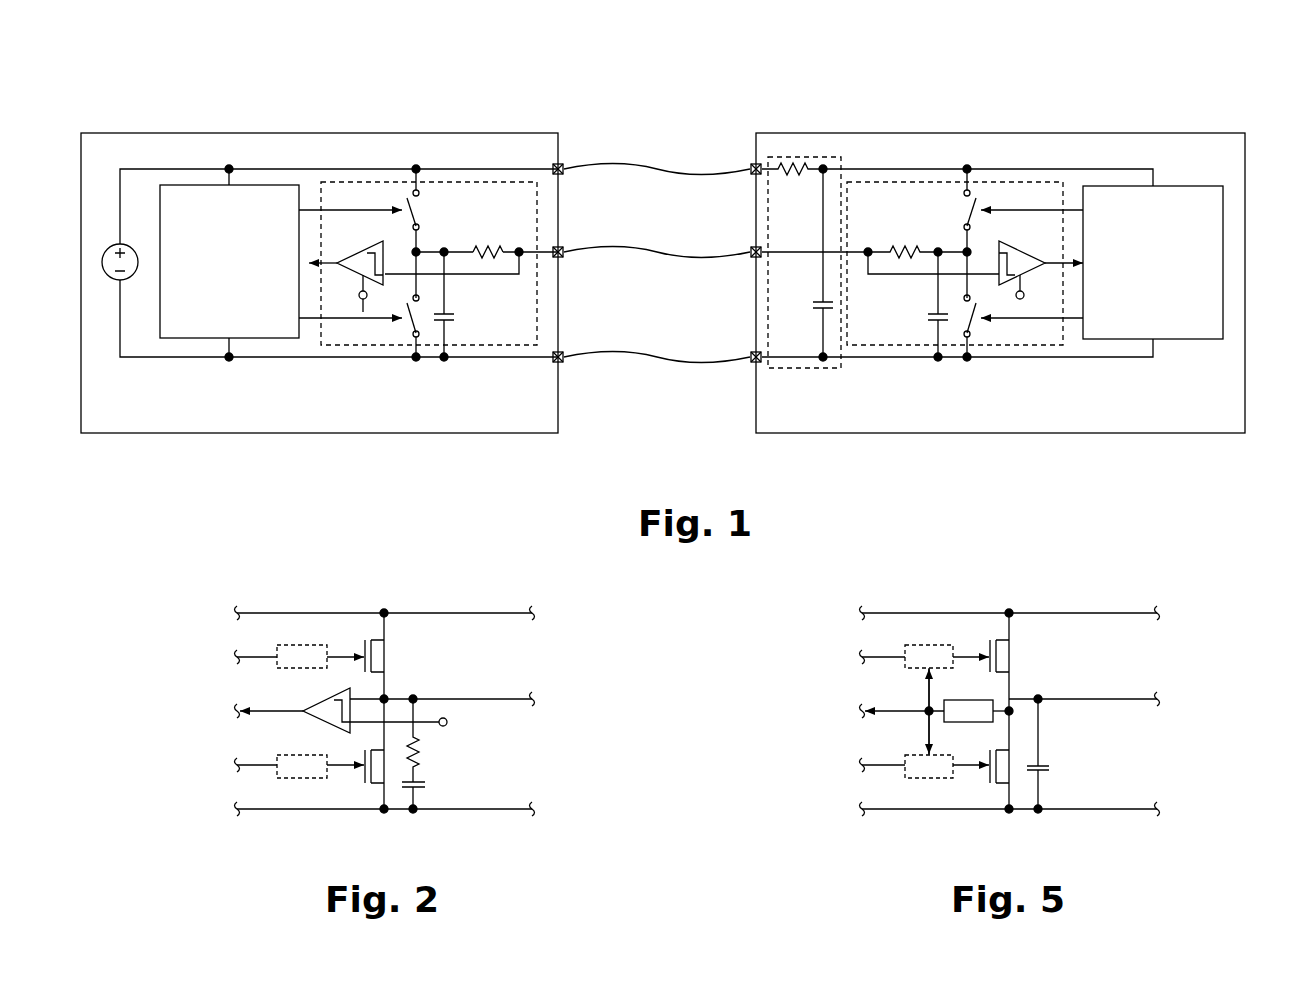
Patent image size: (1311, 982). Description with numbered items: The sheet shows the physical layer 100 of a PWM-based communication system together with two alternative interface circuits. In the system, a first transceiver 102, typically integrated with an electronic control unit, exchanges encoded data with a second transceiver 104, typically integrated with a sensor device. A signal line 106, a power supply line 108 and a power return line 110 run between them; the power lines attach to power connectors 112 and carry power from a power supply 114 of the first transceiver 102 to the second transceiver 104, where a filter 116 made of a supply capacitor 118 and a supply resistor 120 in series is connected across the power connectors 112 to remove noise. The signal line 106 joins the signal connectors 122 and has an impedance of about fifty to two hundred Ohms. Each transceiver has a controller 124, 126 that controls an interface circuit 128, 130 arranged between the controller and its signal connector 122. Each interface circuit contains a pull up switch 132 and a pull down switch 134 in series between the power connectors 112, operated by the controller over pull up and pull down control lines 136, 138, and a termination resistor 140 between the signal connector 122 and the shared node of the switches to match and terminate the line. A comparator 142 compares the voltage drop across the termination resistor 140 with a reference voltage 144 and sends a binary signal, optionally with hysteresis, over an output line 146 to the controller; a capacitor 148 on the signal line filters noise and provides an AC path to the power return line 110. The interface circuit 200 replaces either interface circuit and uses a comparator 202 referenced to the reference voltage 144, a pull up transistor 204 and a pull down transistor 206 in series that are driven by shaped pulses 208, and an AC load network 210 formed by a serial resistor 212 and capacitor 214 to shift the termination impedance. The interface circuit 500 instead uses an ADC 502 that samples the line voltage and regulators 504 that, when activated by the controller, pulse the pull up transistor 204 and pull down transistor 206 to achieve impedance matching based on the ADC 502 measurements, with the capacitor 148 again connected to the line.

In FIG. 1, the physical layer 100 is at (1268, 102).
In FIG. 1, the first transceiver 102 is at (319, 283).
In FIG. 1, the second transceiver 104 is at (1000, 283).
In FIG. 1, the signal line 106 is at (659, 245).
In FIG. 1, the power supply line 108 is at (659, 162).
In FIG. 1, the power return line 110 is at (659, 352).
In FIG. 1, the power connectors 112 is at (750, 165).
In FIG. 1, the power supply 114 is at (106, 247).
In FIG. 1, the filter 116 is at (828, 157).
In FIG. 1, the supply capacitor 118 is at (821, 300).
In FIG. 1, the supply resistor 120 is at (782, 157).
In FIG. 1, the signal connectors 122 is at (562, 247).
In FIG. 1, the controller 124 is at (229, 261).
In FIG. 1, the controller 126 is at (1153, 262).
In FIG. 1, the interface circuit 128 is at (485, 182).
In FIG. 1, the interface circuit 130 is at (868, 182).
In FIG. 1, the pull up switch 132 is at (972, 210).
In FIG. 1, the pull down switch 134 is at (970, 327).
In FIG. 1, the pull up control line 136 is at (1043, 210).
In FIG. 1, the pull down control line 138 is at (1043, 318).
In FIG. 1, the termination resistor 140 is at (905, 258).
In FIG. 1, the comparator 142 is at (383, 240).
In FIG. 1, the reference voltage 144 is at (365, 312).
In FIG. 2, the reference voltage 144 is at (445, 718).
In FIG. 1, the output line 146 is at (332, 268).
In FIG. 1, the capacitor 148 is at (454, 316).
In FIG. 5, the capacitor 148 is at (1050, 771).
In FIG. 2, the interface circuit 200 is at (558, 573).
In FIG. 2, the comparator 202 is at (337, 687).
In FIG. 2, the pull up transistor 204 is at (365, 648).
In FIG. 5, the pull up transistor 204 is at (990, 648).
In FIG. 2, the pull down transistor 206 is at (365, 775).
In FIG. 5, the pull down transistor 206 is at (990, 775).
In FIG. 2, the pulses 208 is at (304, 645).
In FIG. 2, the AC load network 210 is at (459, 756).
In FIG. 2, the resistor 212 is at (420, 744).
In FIG. 2, the capacitor 214 is at (428, 778).
In FIG. 5, the interface circuit 500 is at (1183, 573).
In FIG. 5, the ADC 502 is at (960, 699).
In FIG. 5, the regulators 504 is at (929, 645).